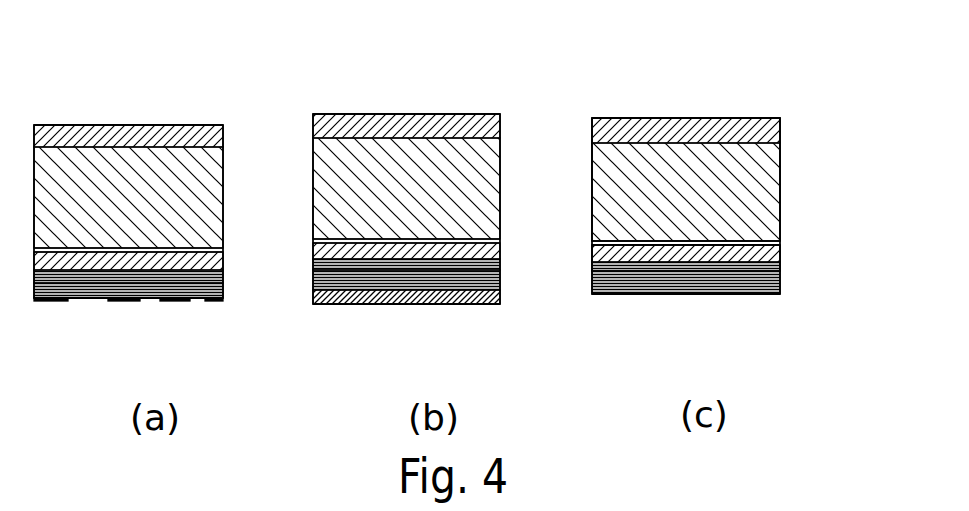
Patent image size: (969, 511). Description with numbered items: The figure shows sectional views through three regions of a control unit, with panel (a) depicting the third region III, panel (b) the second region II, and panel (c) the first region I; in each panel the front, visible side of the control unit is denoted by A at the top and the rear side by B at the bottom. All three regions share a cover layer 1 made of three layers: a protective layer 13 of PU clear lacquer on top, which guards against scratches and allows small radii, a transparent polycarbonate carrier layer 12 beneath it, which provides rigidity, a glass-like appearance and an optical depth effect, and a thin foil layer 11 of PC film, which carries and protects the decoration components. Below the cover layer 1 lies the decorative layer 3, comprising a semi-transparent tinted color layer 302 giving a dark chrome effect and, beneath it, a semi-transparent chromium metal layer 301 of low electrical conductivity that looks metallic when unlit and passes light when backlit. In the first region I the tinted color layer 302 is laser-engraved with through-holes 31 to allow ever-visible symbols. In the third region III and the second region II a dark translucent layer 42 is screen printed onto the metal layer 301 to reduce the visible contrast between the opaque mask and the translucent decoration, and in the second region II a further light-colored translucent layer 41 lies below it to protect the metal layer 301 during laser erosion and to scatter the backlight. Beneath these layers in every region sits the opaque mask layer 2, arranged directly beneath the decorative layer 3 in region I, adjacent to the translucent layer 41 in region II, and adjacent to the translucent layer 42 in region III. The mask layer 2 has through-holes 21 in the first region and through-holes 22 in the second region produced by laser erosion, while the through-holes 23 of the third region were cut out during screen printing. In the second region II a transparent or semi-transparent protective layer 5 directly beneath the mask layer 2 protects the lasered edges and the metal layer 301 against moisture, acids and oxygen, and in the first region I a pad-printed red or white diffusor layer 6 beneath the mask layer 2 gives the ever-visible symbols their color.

The cover layer 1 is at (858, 102).
The mask layer 2 is at (223, 296).
The decorative layer 3 is at (859, 237).
The protective layer 5 is at (500, 294).
The diffusor layer 6 is at (780, 287).
The foil layer 11 is at (223, 250).
The carrier layer 12 is at (223, 190).
The protective layer 13 is at (223, 136).
The through-holes 21 is at (707, 295).
The through-holes 22 is at (372, 304).
The through-holes 23 is at (93, 302).
The through-holes 31 is at (737, 247).
The translucent layer 41 is at (500, 287).
The translucent layer 42 is at (223, 288).
The metal layer 301 is at (223, 276).
The tinted color layer 302 is at (223, 261).
The front side A is at (158, 125).
The rear side B is at (170, 302).
The first region I is at (665, 100).
The second region II is at (392, 100).
The third region III is at (118, 104).